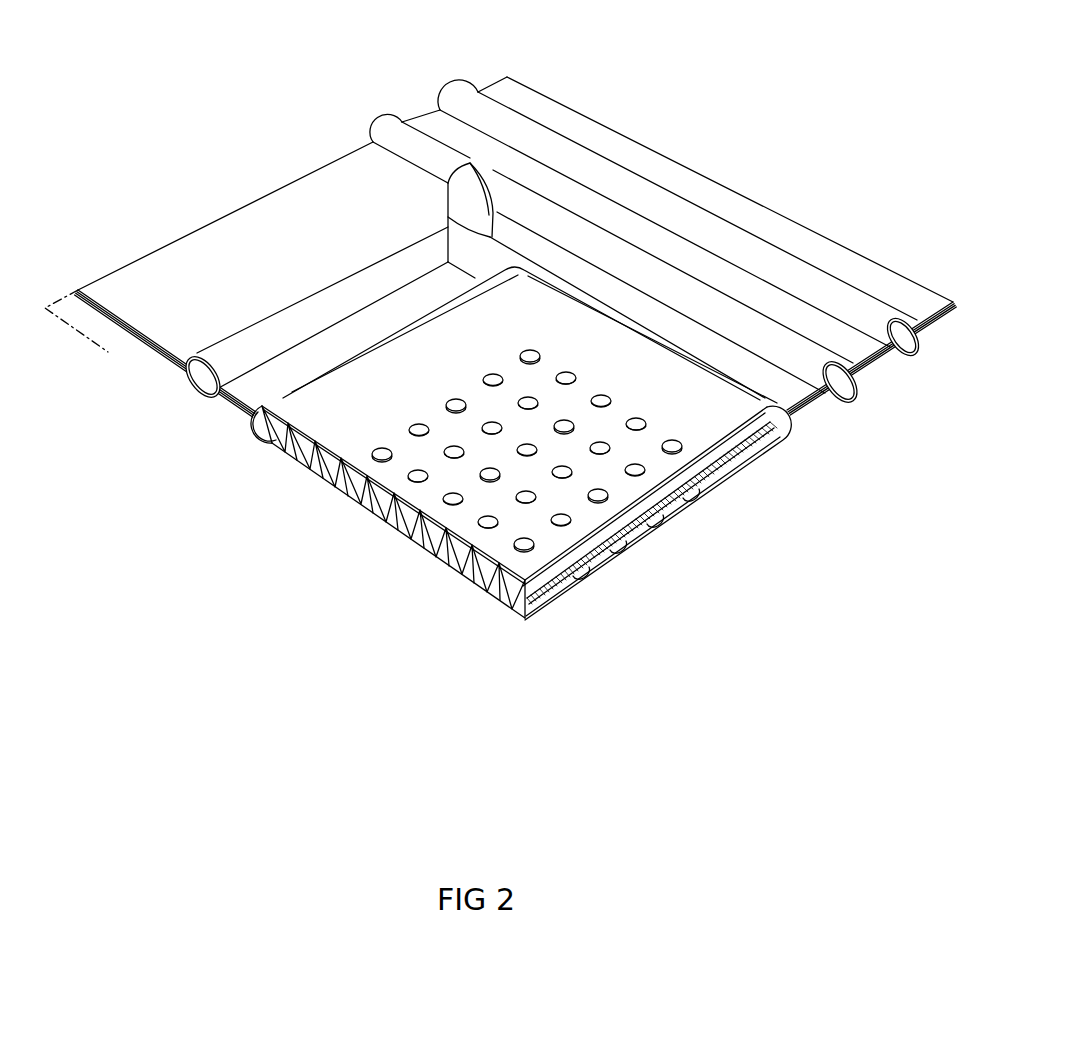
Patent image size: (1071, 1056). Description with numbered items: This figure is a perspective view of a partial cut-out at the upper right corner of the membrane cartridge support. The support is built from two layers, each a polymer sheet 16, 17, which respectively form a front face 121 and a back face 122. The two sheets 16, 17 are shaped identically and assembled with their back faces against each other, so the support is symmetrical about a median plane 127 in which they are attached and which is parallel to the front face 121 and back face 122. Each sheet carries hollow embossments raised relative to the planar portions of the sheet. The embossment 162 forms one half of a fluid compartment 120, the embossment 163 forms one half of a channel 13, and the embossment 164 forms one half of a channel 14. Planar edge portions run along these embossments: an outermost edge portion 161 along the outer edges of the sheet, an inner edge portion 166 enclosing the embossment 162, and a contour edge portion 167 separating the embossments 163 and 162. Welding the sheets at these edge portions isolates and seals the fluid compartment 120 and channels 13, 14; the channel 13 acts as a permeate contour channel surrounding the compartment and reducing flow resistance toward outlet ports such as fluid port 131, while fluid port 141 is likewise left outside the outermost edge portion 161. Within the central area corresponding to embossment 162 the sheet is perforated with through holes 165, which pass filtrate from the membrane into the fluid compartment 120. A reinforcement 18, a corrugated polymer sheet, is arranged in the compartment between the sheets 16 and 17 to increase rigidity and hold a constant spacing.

The front face 121 is at (222, 260).
The back face 122 is at (155, 356).
The median plane 127 is at (67, 327).
The fluid port 131 is at (392, 122).
The fluid port 141 is at (443, 88).
The outermost edge portion 161 is at (178, 288).
The embossment 163 is at (723, 310).
The embossment 164 is at (840, 293).
The inner edge portion 166 is at (796, 310).
The contour edge portion 167 is at (777, 385).
The channel 13 is at (195, 380).
The channel 14 is at (905, 350).
The fluid compartment 120 is at (501, 417).
The polymer sheet 16 is at (717, 453).
The embossment 162 is at (340, 395).
The through holes 165 is at (621, 546).
The reinforcement 18 is at (678, 507).
The polymer sheet 17 is at (647, 537).